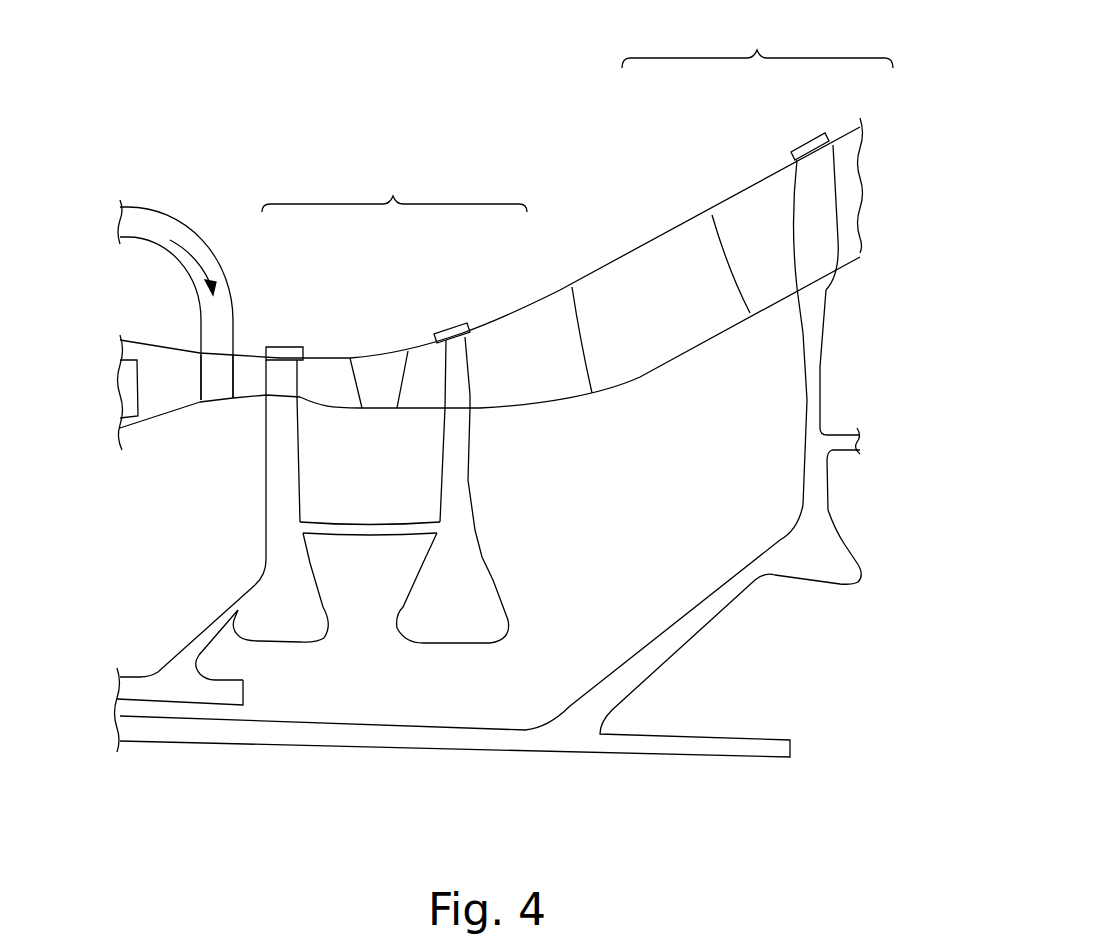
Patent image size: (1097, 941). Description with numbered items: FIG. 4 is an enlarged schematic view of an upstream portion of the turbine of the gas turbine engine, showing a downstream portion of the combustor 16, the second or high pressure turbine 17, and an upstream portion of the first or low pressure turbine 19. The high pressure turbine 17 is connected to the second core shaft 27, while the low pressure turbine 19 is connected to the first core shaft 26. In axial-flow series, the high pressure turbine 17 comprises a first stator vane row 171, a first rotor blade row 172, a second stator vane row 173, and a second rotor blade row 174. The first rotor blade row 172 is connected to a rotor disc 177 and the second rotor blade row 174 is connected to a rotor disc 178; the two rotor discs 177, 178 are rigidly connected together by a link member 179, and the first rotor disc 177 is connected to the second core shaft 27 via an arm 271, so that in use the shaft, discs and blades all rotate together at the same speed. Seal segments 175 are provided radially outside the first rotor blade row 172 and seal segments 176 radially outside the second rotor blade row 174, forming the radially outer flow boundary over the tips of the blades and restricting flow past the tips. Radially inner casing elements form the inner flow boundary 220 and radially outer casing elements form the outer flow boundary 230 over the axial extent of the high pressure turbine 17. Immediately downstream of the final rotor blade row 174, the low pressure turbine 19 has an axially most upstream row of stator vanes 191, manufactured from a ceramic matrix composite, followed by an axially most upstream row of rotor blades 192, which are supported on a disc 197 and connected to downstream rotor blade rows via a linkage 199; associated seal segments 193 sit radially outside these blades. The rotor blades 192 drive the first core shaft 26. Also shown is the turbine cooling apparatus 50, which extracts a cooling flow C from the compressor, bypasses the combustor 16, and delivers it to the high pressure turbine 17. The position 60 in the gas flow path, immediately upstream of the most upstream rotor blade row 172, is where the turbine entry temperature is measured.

The combustor 16 is at (125, 375).
The high pressure turbine 17 is at (394, 190).
The low pressure turbine 19 is at (757, 42).
The first core shaft 26 is at (415, 748).
The second core shaft 27 is at (247, 697).
The turbine cooling apparatus 50 is at (157, 210).
The position in the gas flow path 60 is at (258, 385).
The first stator vane row 171 is at (222, 365).
The first rotor blade row 172 is at (287, 380).
The second stator vane row 173 is at (375, 373).
The second rotor blade row 174 is at (455, 357).
The seal segments 175 is at (282, 350).
The seal segments 176 is at (448, 335).
The rotor disc 177 is at (258, 486).
The rotor disc 178 is at (470, 515).
The link member 179 is at (363, 525).
The stator vanes 191 is at (653, 263).
The rotor blades 192 is at (807, 215).
The seal segments 193 is at (813, 143).
The disc 197 is at (810, 347).
The linkage 199 is at (840, 417).
The inner flow boundary 220 is at (573, 398).
The outer flow boundary 230 is at (557, 290).
The arm 271 is at (192, 652).
The cooling flow C is at (197, 250).